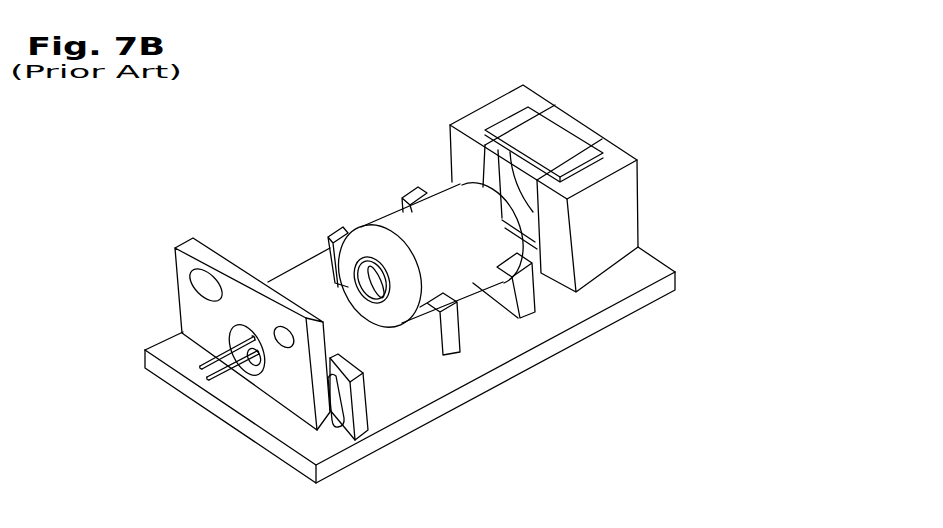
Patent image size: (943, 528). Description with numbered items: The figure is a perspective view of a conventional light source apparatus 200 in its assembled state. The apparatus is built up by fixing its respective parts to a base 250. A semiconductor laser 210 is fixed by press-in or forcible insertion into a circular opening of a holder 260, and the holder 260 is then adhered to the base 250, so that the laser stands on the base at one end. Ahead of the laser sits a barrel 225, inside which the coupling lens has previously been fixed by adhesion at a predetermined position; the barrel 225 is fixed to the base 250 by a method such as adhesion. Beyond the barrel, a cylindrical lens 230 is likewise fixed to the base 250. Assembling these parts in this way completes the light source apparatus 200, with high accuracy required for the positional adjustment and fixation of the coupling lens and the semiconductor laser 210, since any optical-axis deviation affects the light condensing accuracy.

The light source apparatus 200 is at (240, 147).
The semiconductor laser 210 is at (258, 364).
The barrel 225 is at (397, 226).
The cylindrical lens 230 is at (560, 138).
The base 250 is at (493, 388).
The holder 260 is at (218, 258).